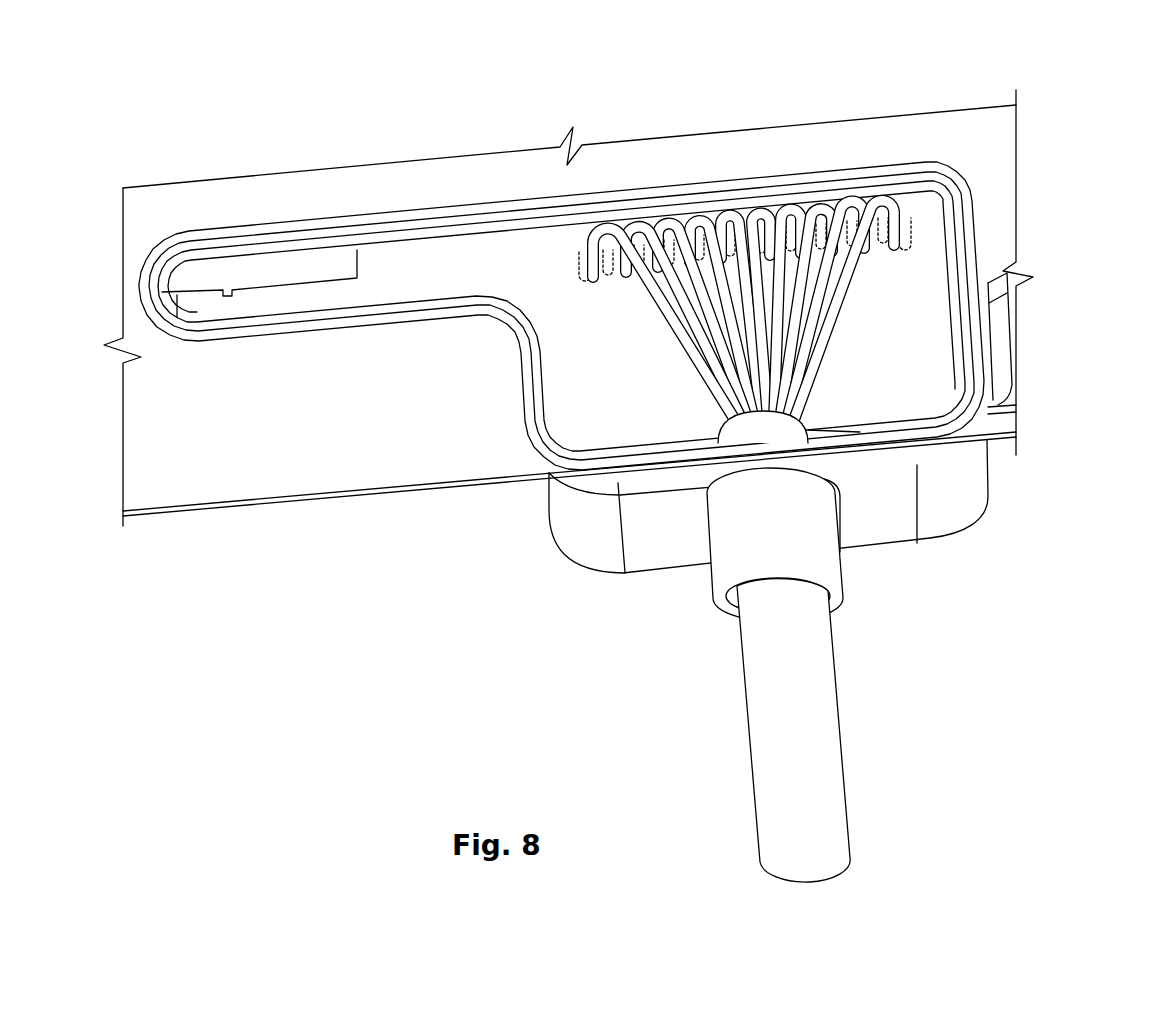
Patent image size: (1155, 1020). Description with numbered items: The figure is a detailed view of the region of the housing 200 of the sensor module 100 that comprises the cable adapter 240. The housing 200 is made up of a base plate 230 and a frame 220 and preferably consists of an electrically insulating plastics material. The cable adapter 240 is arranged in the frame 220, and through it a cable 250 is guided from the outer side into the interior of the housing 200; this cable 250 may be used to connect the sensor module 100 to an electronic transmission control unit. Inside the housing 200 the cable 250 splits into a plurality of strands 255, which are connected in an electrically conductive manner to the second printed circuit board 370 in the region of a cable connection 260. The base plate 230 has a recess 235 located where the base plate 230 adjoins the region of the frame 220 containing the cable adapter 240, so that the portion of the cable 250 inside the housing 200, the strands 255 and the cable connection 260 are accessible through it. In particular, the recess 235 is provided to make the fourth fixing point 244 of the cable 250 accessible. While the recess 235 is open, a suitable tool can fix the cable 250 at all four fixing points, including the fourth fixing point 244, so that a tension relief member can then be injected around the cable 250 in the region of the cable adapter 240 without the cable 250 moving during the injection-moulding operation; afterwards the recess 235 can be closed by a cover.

The sensor module 100 is at (257, 66).
The housing 200 is at (619, 473).
The base plate 230 is at (1003, 124).
The frame 220 is at (963, 517).
The recess 235 is at (965, 320).
The cable adapter 240 is at (722, 573).
The fourth fixing point 244 is at (860, 432).
The cable 250 is at (752, 803).
The strands 255 is at (682, 345).
The cable connection 260 is at (582, 272).
The second printed circuit board 370 is at (455, 258).